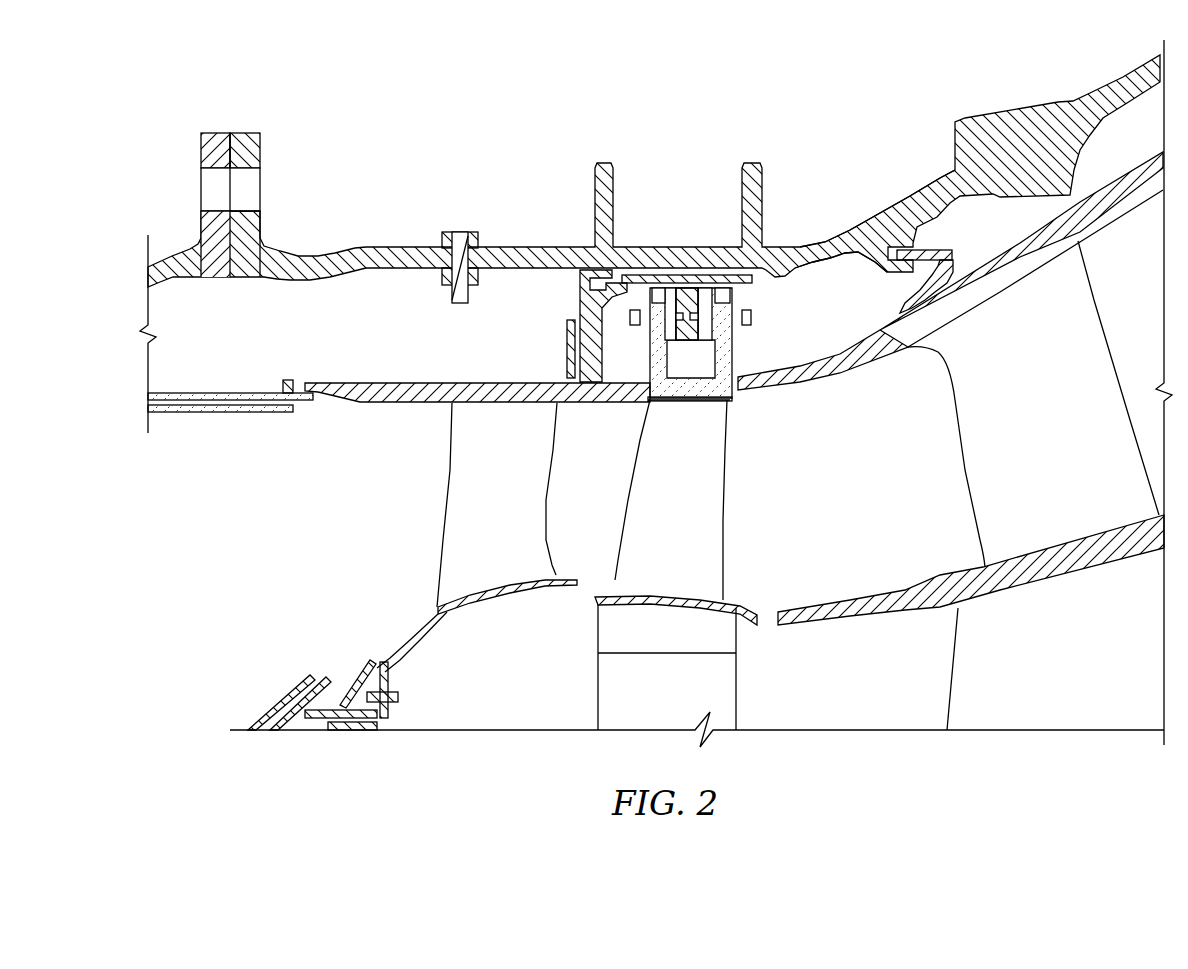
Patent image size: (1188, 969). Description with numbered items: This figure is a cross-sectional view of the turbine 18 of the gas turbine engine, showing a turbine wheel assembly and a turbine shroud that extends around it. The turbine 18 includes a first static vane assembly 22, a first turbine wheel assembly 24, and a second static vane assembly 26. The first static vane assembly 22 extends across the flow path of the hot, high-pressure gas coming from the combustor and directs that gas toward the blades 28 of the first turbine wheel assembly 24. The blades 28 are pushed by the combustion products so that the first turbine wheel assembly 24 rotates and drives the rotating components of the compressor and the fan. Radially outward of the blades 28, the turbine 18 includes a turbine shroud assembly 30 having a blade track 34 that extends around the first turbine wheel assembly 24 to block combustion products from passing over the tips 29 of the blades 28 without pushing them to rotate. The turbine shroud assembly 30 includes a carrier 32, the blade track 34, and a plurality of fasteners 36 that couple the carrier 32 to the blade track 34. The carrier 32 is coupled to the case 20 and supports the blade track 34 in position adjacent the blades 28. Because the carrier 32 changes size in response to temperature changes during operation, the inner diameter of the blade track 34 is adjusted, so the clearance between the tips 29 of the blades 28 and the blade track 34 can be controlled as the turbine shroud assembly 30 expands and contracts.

The turbine 18 is at (780, 272).
The case 20 is at (893, 229).
The first static vane assembly 22 is at (440, 475).
The first turbine wheel assembly 24 is at (689, 565).
The second static vane assembly 26 is at (1103, 290).
The blades 28 is at (643, 428).
The tips 29 is at (698, 404).
The turbine shroud assembly 30 is at (668, 272).
The carrier 32 is at (740, 296).
The blade track 34 is at (735, 352).
The fasteners 36 is at (612, 317).